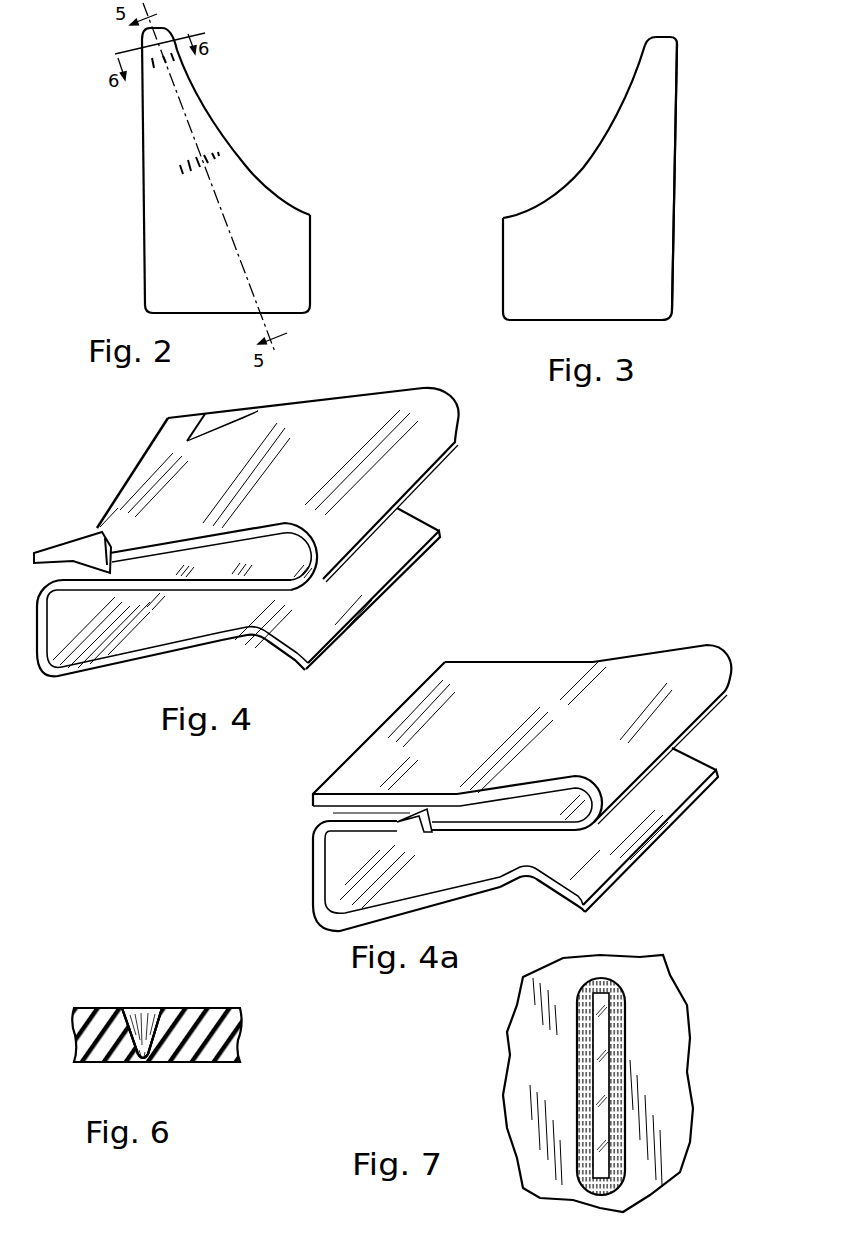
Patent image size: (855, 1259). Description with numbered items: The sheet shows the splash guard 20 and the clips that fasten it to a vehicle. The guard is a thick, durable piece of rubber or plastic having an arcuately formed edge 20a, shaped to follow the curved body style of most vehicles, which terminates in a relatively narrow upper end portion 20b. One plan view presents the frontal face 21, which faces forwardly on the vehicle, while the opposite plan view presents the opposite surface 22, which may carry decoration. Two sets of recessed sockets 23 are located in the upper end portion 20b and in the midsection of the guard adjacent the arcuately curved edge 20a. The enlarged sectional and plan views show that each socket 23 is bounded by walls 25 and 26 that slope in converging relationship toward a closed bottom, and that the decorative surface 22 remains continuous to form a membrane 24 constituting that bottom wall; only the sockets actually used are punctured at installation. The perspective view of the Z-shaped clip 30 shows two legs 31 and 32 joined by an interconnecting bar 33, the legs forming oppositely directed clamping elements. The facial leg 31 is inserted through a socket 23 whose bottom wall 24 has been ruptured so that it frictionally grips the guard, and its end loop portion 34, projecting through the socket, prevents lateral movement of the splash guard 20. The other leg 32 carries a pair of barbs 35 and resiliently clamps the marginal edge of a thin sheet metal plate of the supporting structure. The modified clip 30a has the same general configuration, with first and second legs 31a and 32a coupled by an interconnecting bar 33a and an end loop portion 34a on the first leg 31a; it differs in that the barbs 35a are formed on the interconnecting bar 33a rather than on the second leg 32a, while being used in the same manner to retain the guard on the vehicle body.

In FIG. 2, the splash guard 20 is at (196, 170).
In FIG. 3, the splash guard 20 is at (622, 178).
In FIG. 6, the splash guard 20 is at (156, 1023).
In FIG. 7, the splash guard 20 is at (622, 1083).
In FIG. 2, the arcuately formed edge 20a is at (218, 129).
In FIG. 3, the arcuately formed edge 20a is at (608, 130).
In FIG. 2, the upper end portion 20b is at (137, 125).
In FIG. 3, the upper end portion 20b is at (667, 73).
In FIG. 2, the frontal face 21 is at (200, 277).
In FIG. 6, the frontal face 21 is at (210, 1007).
In FIG. 7, the frontal face 21 is at (653, 985).
In FIG. 3, the opposite surface 22 is at (598, 281).
In FIG. 6, the opposite surface 22 is at (216, 1062).
In FIG. 2, the recessed socket 23 is at (176, 63).
In FIG. 6, the recessed socket 23 is at (145, 1007).
In FIG. 7, the recessed socket 23 is at (616, 1086).
In FIG. 6, the membrane 24 is at (147, 1062).
In FIG. 7, the membrane 24 is at (600, 1048).
In FIG. 6, the socket wall 25 is at (159, 1007).
In FIG. 7, the socket wall 25 is at (618, 1041).
In FIG. 6, the socket wall 26 is at (127, 1007).
In FIG. 7, the socket wall 26 is at (583, 1080).
In FIG. 4, the Z-shaped clip 30 is at (255, 541).
In FIG. 4, the facial leg 31 is at (175, 640).
In FIG. 4, the barbed leg 32 is at (387, 372).
In FIG. 4, the interconnecting bar 33 is at (200, 587).
In FIG. 4, the end loop portion 34 is at (38, 673).
In FIG. 4, the barb 35 is at (248, 393).
In FIG. 4A, the modified attachment clip 30a is at (518, 781).
In FIG. 4A, the first leg 31a is at (632, 838).
In FIG. 4A, the second leg 32a is at (557, 642).
In FIG. 4A, the interconnecting bar 33a is at (457, 827).
In FIG. 4A, the end loop portion 34a is at (318, 888).
In FIG. 4A, the barb 35a is at (410, 818).